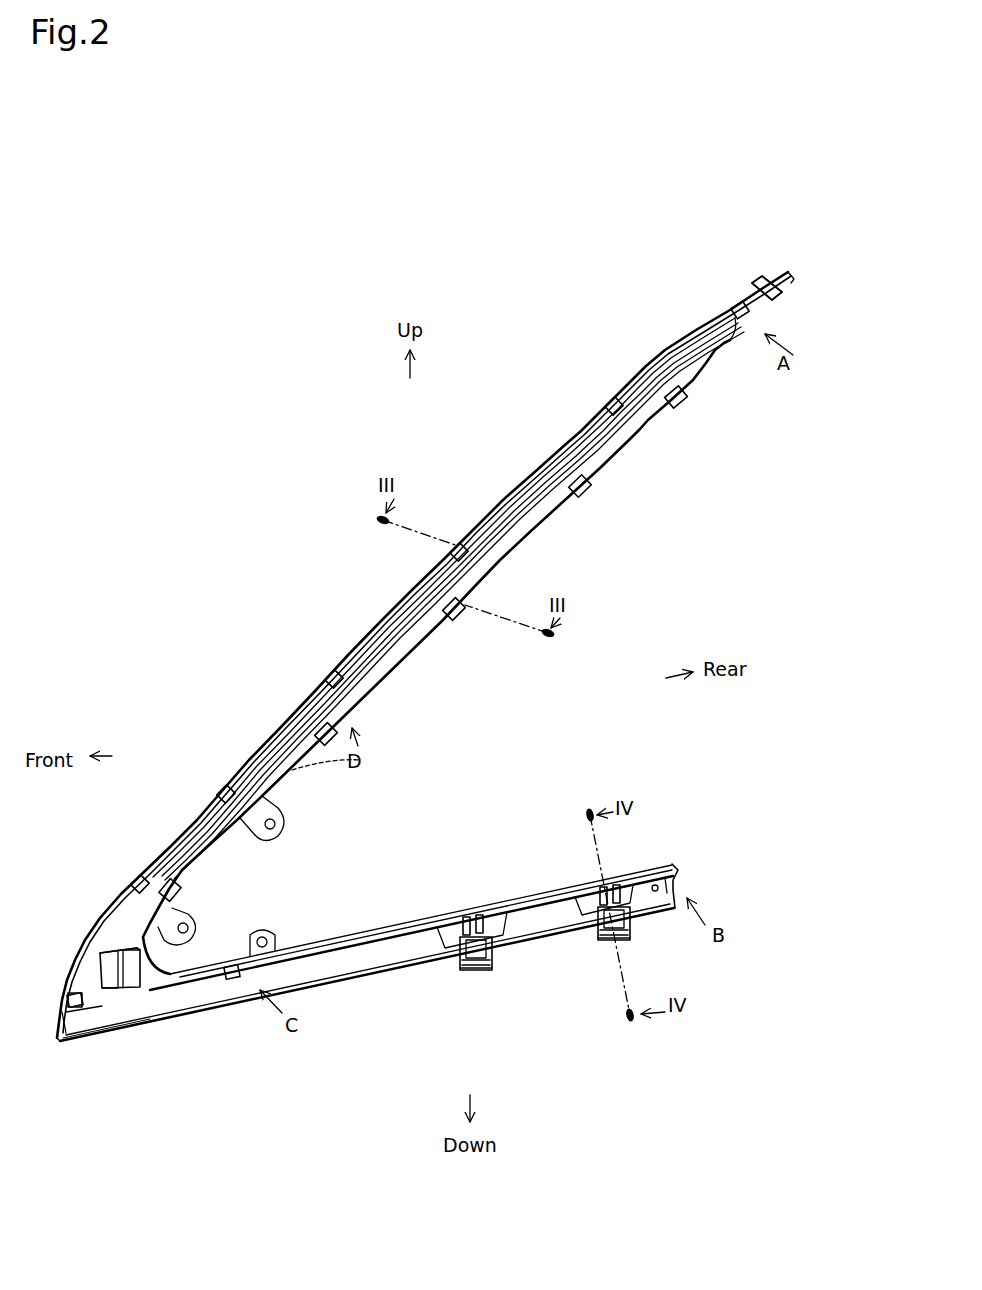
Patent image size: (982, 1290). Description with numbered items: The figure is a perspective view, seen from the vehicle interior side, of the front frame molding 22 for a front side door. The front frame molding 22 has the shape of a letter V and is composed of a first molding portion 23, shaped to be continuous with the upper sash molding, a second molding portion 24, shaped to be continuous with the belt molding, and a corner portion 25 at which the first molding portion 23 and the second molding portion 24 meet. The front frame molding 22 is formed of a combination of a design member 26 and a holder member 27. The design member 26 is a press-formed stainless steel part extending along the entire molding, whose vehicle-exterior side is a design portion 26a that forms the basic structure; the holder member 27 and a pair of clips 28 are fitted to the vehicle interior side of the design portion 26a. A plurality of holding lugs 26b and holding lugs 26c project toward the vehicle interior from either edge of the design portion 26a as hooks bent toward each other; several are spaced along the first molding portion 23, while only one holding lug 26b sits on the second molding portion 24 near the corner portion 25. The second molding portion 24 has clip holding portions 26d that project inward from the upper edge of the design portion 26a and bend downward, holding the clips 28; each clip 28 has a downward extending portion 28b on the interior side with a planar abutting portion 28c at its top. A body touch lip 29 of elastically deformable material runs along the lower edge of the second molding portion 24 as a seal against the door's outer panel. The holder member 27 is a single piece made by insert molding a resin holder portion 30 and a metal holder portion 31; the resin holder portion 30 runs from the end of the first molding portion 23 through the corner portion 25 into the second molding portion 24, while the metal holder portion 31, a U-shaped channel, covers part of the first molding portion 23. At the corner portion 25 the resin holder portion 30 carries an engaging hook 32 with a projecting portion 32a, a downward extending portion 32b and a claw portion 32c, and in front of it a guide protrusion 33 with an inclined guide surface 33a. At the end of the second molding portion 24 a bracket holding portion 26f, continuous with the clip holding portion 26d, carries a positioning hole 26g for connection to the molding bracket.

The front frame molding 22 is at (252, 418).
The first molding portion 23 is at (296, 670).
The second molding portion 24 is at (406, 1016).
The corner portion 25 is at (74, 936).
The design member 26 is at (326, 940).
The design portion 26a is at (395, 948).
The holding lug 26b is at (733, 305).
The holding lug 26c is at (684, 402).
The clip holding portion 26d is at (455, 925).
The bracket holding portion 26f is at (645, 880).
The positioning hole 26g is at (668, 885).
The holder member 27 is at (440, 768).
The clip 28 is at (479, 977).
The downward extending portion 28b is at (487, 956).
The planar abutting portion 28c is at (463, 970).
The body touch lip 29 is at (330, 990).
The resin holder portion 30 is at (360, 760).
The metal holder portion 31 is at (762, 295).
The engaging hook 32 is at (121, 938).
The projecting portion 32a is at (108, 950).
The downward extending portion 32b is at (125, 996).
The claw portion 32c is at (112, 1000).
The guide protrusion 33 is at (88, 963).
The guide surface 33a is at (64, 1028).